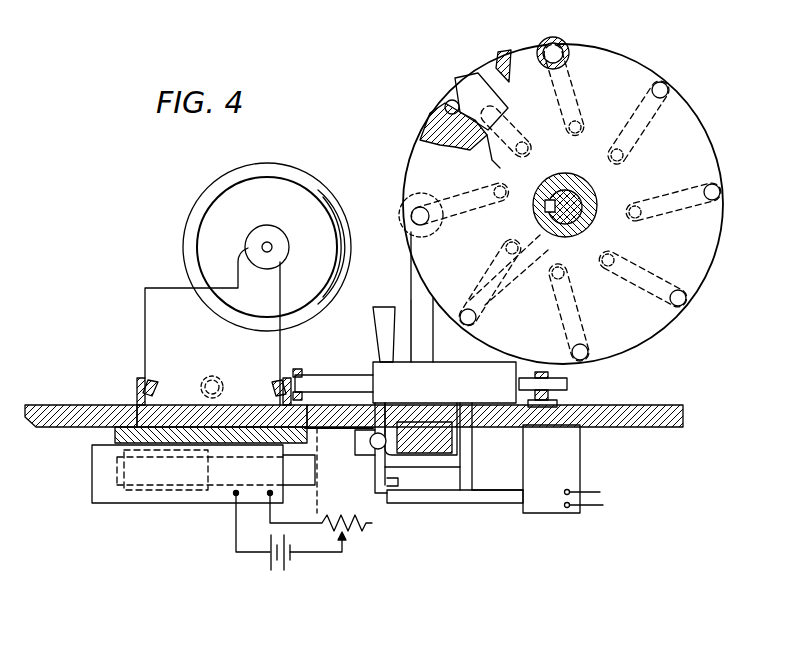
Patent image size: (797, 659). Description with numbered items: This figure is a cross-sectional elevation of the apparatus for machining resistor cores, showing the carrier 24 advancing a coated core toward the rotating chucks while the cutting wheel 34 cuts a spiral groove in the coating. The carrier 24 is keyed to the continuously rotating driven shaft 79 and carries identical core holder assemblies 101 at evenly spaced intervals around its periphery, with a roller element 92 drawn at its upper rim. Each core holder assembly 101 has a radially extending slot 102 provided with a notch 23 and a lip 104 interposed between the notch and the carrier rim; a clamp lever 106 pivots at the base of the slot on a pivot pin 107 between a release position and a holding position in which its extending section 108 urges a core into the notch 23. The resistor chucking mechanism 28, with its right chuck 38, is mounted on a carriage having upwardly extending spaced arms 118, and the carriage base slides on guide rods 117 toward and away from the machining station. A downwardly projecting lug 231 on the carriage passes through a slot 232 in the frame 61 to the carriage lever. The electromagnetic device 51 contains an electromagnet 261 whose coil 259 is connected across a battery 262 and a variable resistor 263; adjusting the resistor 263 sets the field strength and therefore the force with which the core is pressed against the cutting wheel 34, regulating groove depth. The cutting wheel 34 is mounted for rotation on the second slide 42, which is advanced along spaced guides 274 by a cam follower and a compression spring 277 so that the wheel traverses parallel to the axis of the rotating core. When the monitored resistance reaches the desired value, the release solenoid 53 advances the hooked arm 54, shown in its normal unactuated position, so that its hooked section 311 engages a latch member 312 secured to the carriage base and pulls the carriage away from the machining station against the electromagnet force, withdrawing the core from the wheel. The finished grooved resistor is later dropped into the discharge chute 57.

The notch 23 is at (438, 116).
The carrier 24 is at (714, 166).
The resistor chucking mechanism 28 is at (400, 242).
The abrasive cutting wheel 34 is at (200, 232).
The right chuck 38 is at (406, 210).
The second slide 42 is at (146, 315).
The electromagnetic device 51 is at (90, 463).
The release solenoid 53 is at (568, 464).
The hooked arm 54 is at (447, 505).
The discharge chute 57 is at (378, 320).
The frame 61 is at (631, 405).
The driven shaft 79 is at (572, 180).
The roller 92 is at (543, 46).
The core holder assembly 101 is at (604, 39).
The radially extending slot 102 is at (492, 152).
The lip 104 is at (446, 104).
The clamp lever 106 is at (492, 108).
The pivot pin 107 is at (582, 126).
The extending section 108 is at (472, 82).
The guide rods 117 is at (336, 375).
The spaced arms 118 is at (412, 295).
The downwardly projecting lug 231 is at (428, 416).
The slot 232 is at (487, 410).
The coil 259 is at (140, 488).
The electromagnet 261 is at (182, 494).
The battery 262 is at (272, 578).
The variable resistor 263 is at (372, 527).
The spaced guides 274 is at (172, 366).
The compression spring 277 is at (213, 375).
The hooked section 311 is at (387, 483).
The latch member 312 is at (464, 474).